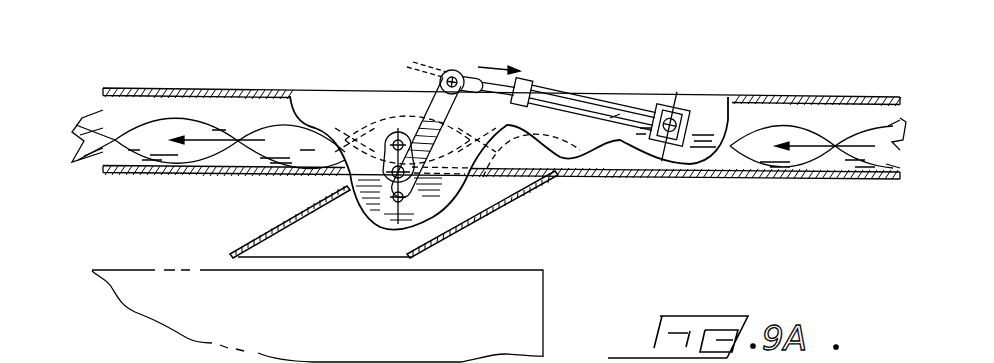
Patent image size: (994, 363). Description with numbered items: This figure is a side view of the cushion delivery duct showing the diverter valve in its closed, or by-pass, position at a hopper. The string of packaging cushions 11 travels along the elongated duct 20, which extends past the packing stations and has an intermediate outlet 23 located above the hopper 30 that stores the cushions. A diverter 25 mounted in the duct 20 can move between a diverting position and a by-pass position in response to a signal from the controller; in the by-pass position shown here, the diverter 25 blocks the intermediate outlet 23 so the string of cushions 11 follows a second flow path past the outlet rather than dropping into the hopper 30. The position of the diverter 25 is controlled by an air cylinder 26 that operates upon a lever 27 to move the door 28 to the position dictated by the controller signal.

The elongated duct 20 is at (170, 80).
The string of packaging cushions 11 is at (265, 123).
The intermediate outlet 23 is at (328, 270).
The diverter 25 is at (568, 79).
The air cylinder 26 is at (622, 108).
The lever 27 is at (417, 132).
The door 28 is at (513, 173).
The hopper 30 is at (535, 308).